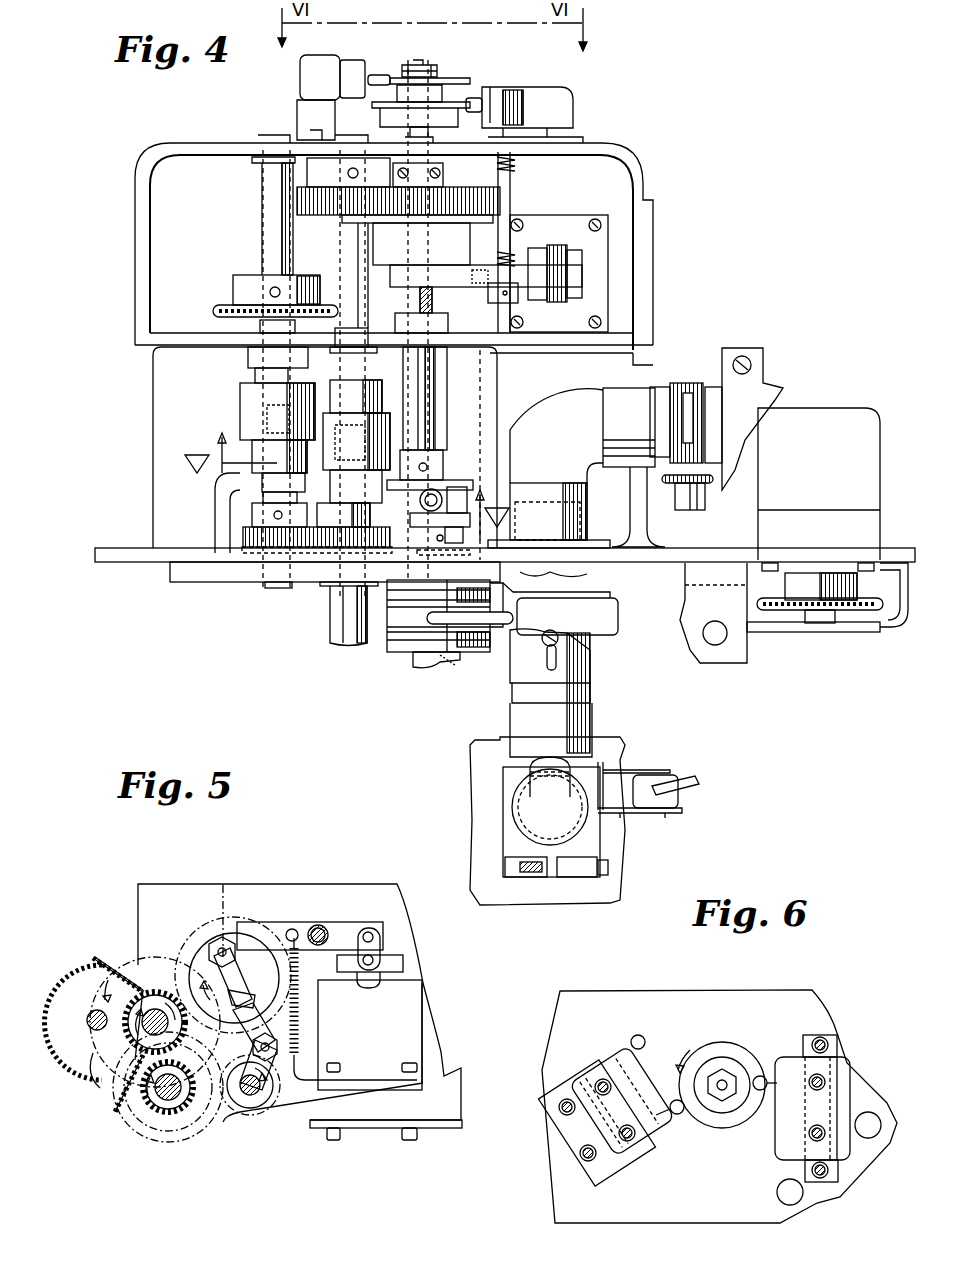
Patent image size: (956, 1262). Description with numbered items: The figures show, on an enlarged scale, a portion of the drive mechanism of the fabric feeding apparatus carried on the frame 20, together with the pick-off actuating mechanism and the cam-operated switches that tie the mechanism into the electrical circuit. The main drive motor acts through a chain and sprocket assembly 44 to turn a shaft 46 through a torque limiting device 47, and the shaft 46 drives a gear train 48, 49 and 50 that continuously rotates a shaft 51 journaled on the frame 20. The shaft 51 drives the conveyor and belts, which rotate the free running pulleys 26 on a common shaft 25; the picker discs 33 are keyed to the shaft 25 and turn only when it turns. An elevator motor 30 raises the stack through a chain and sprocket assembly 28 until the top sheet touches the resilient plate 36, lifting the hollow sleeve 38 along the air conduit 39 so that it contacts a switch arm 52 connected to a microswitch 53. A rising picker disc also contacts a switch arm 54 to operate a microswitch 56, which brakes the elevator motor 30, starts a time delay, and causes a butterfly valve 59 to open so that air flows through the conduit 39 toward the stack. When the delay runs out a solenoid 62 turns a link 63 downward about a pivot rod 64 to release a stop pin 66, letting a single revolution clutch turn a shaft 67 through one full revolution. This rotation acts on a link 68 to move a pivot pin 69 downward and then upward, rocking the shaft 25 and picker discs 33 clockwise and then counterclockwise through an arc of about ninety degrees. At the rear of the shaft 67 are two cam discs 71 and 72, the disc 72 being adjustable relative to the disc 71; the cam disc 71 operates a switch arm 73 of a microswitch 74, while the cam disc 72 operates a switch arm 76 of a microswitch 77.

In FIG. 4, the frame 20 is at (116, 572).
In FIG. 4, the shaft 25 is at (418, 667).
In FIG. 5, the shaft 25 is at (250, 1110).
In FIG. 4, the free running pulleys 26 is at (395, 652).
In FIG. 4, the chain and sprocket assembly 28 is at (890, 622).
In FIG. 4, the elevator motor 30 is at (825, 408).
In FIG. 4, the picker discs 33 is at (400, 623).
In FIG. 4, the resilient plate 36 is at (472, 800).
In FIG. 4, the hollow sleeve 38 is at (588, 812).
In FIG. 4, the air conduit 39 is at (580, 395).
In FIG. 4, the chain and sprocket assembly 44 is at (233, 290).
In FIG. 5, the chain and sprocket assembly 44 is at (138, 965).
In FIG. 4, the shaft 46 is at (278, 590).
In FIG. 5, the shaft 46 is at (103, 963).
In FIG. 4, the torque limiting device 47 is at (240, 413).
In FIG. 4, the gear train 48 is at (242, 537).
In FIG. 5, the gear train 48 is at (117, 1102).
In FIG. 4, the gear train 49 is at (340, 556).
In FIG. 5, the gear train 49 is at (158, 957).
In FIG. 5, the gear train 50 is at (150, 1110).
In FIG. 4, the shaft 51 is at (332, 637).
In FIG. 5, the shaft 51 is at (175, 1105).
In FIG. 4, the switch arm 52 is at (605, 775).
In FIG. 4, the microswitch 53 is at (693, 783).
In FIG. 4, the switch arm 54 is at (500, 645).
In FIG. 4, the microswitch 56 is at (618, 620).
In FIG. 4, the butterfly valve 59 is at (665, 390).
In FIG. 4, the solenoid 62 is at (577, 250).
In FIG. 5, the solenoid 62 is at (408, 980).
In FIG. 4, the link 63 is at (478, 289).
In FIG. 5, the link 63 is at (355, 928).
In FIG. 4, the pivot rod 64 is at (482, 320).
In FIG. 5, the pivot rod 64 is at (318, 925).
In FIG. 4, the stop pin 66 is at (406, 265).
In FIG. 5, the stop pin 66 is at (227, 882).
In FIG. 4, the shaft 67 is at (425, 62).
In FIG. 6, the shaft 67 is at (722, 1092).
In FIG. 4, the link 68 is at (436, 492).
In FIG. 5, the link 68 is at (214, 977).
In FIG. 4, the pivot pin 69 is at (462, 490).
In FIG. 5, the pivot pin 69 is at (258, 1046).
In FIG. 4, the cam disc 71 is at (452, 104).
In FIG. 6, the cam disc 71 is at (728, 1040).
In FIG. 4, the cam disc 72 is at (417, 63).
In FIG. 6, the cam disc 72 is at (738, 1110).
In FIG. 4, the switch arm 73 is at (480, 98).
In FIG. 6, the switch arm 73 is at (679, 1114).
In FIG. 4, the microswitch 74 is at (568, 104).
In FIG. 6, the microswitch 74 is at (578, 1072).
In FIG. 4, the switch arm 76 is at (387, 75).
In FIG. 6, the switch arm 76 is at (764, 1076).
In FIG. 4, the microswitch 77 is at (340, 74).
In FIG. 6, the microswitch 77 is at (843, 1150).